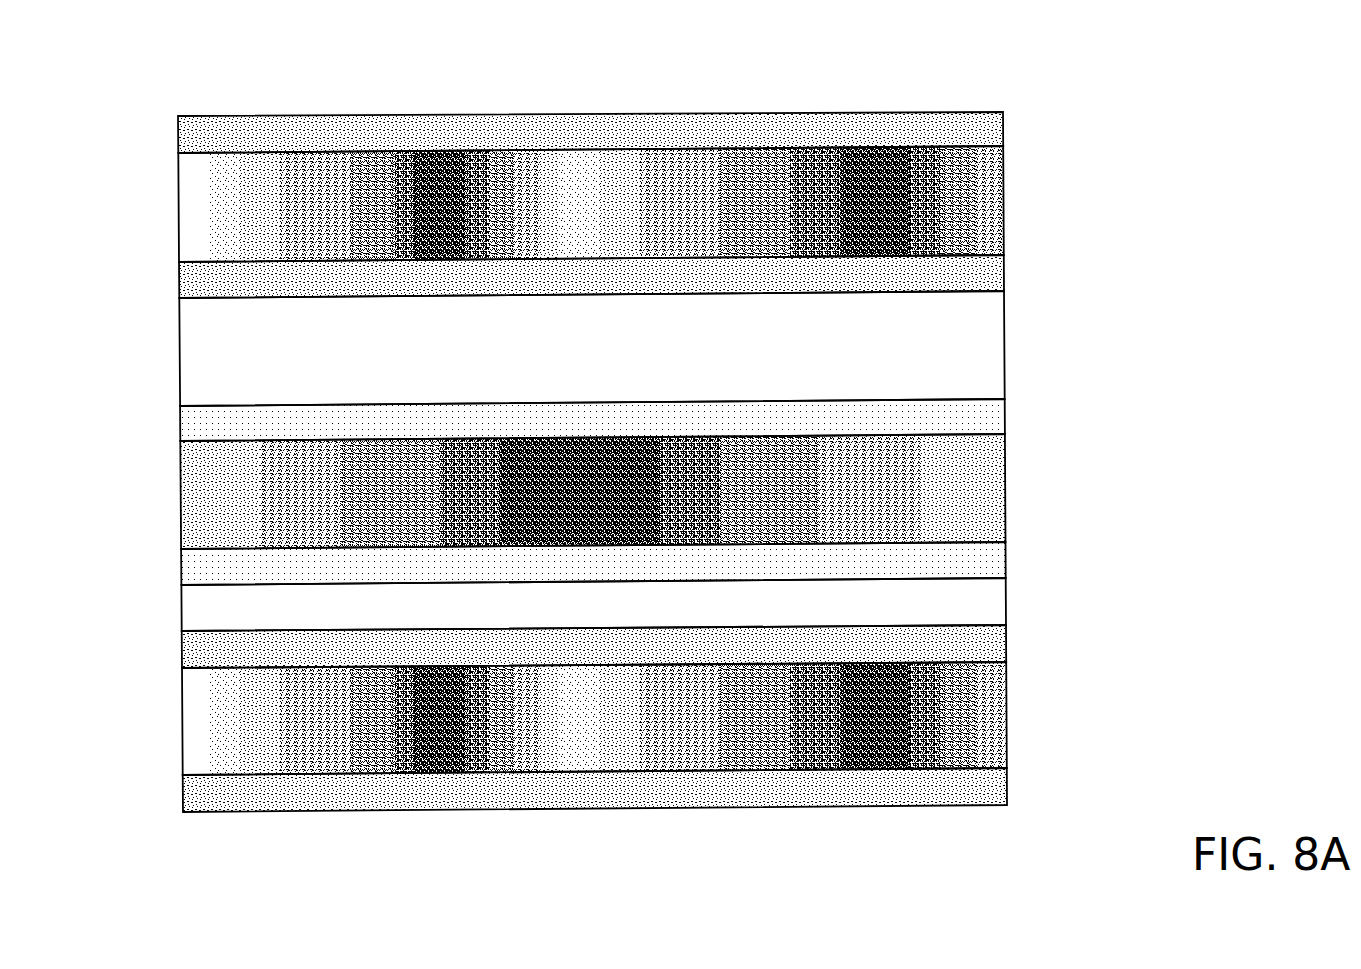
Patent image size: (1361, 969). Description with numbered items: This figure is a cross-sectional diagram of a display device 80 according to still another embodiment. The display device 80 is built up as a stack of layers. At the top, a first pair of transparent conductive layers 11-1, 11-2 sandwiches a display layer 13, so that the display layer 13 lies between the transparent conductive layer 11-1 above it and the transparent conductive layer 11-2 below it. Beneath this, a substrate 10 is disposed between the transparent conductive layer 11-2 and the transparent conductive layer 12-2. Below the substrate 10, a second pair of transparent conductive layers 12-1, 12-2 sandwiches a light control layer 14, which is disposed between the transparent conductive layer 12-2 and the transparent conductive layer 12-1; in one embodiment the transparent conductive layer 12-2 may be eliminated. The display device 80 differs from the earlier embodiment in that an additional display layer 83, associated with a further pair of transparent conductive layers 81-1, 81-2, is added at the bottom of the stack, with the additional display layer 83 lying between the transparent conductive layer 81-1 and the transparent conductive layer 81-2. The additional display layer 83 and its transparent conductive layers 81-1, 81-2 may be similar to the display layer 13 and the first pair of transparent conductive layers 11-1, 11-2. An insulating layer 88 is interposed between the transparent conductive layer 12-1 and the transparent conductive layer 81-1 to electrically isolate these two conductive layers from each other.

The display device 80 is at (114, 93).
The transparent conductive layer 11-1 is at (1005, 124).
The display layer 13 is at (1005, 206).
The transparent conductive layer 11-2 is at (1005, 275).
The substrate 10 is at (1005, 358).
The transparent conductive layer 12-2 is at (1005, 418).
The light control layer 14 is at (1005, 487).
The transparent conductive layer 12-1 is at (1006, 558).
The insulating layer 88 is at (1007, 603).
The transparent conductive layer 81-1 is at (1007, 640).
The additional display layer 83 is at (1007, 720).
The transparent conductive layer 81-2 is at (1007, 790).